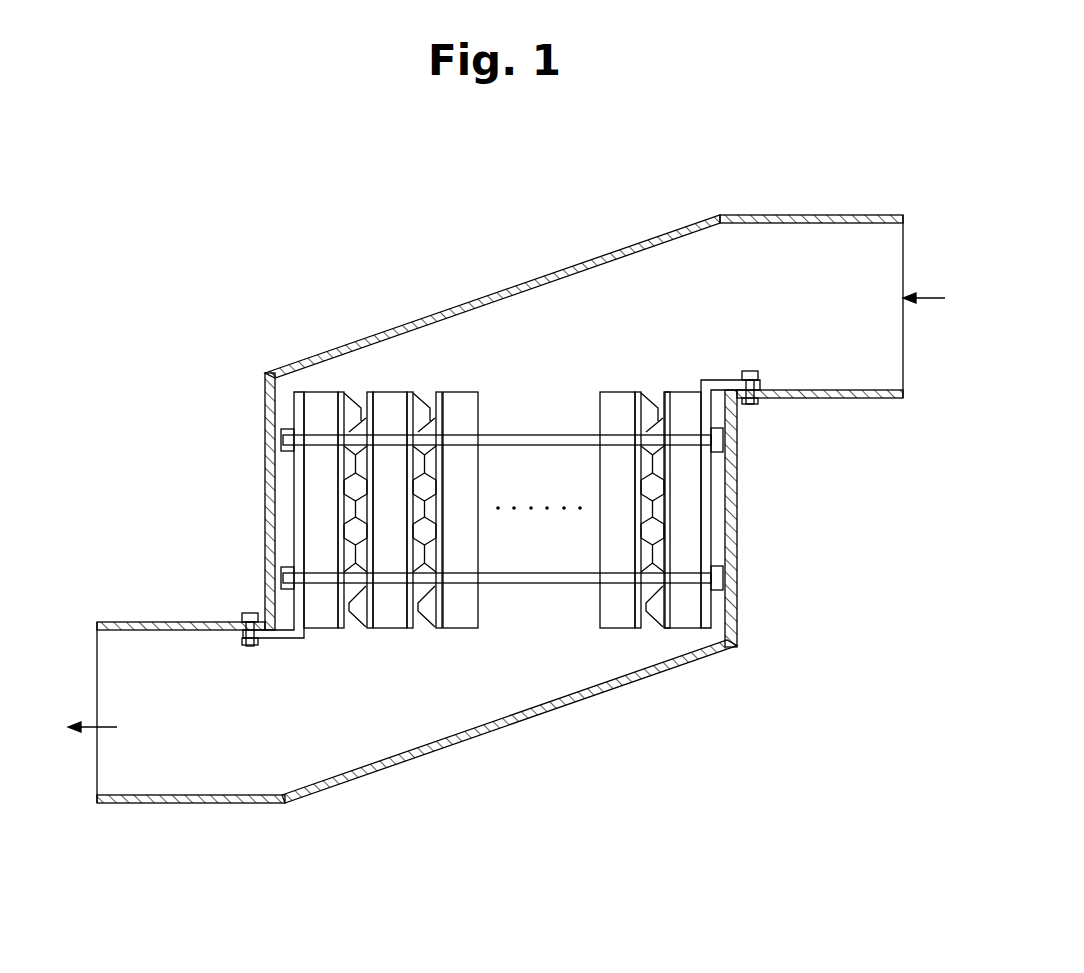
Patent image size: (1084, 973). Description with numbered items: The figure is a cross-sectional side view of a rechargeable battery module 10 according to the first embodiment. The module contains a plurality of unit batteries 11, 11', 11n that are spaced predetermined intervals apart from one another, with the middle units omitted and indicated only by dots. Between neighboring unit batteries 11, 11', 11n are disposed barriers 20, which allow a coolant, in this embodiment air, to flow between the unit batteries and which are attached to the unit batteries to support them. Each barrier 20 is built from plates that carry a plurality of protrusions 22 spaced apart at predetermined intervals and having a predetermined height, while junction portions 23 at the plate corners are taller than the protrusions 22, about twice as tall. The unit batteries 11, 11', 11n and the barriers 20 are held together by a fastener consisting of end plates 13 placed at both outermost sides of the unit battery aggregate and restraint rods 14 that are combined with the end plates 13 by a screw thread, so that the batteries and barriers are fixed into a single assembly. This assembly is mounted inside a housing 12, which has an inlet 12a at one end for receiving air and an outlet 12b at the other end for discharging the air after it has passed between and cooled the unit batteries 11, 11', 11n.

The rechargeable battery module 10 is at (518, 174).
The unit battery 11 is at (347, 610).
The unit battery 11' is at (416, 595).
The unit battery 11n is at (685, 618).
The housing 12 is at (737, 456).
The inlet 12a is at (903, 343).
The outlet 12b is at (97, 757).
The end plate 13 is at (298, 497).
The restraint rod 14 is at (528, 435).
The barrier 20 is at (422, 392).
The protrusion 22 is at (347, 467).
The junction portion 23 is at (347, 410).